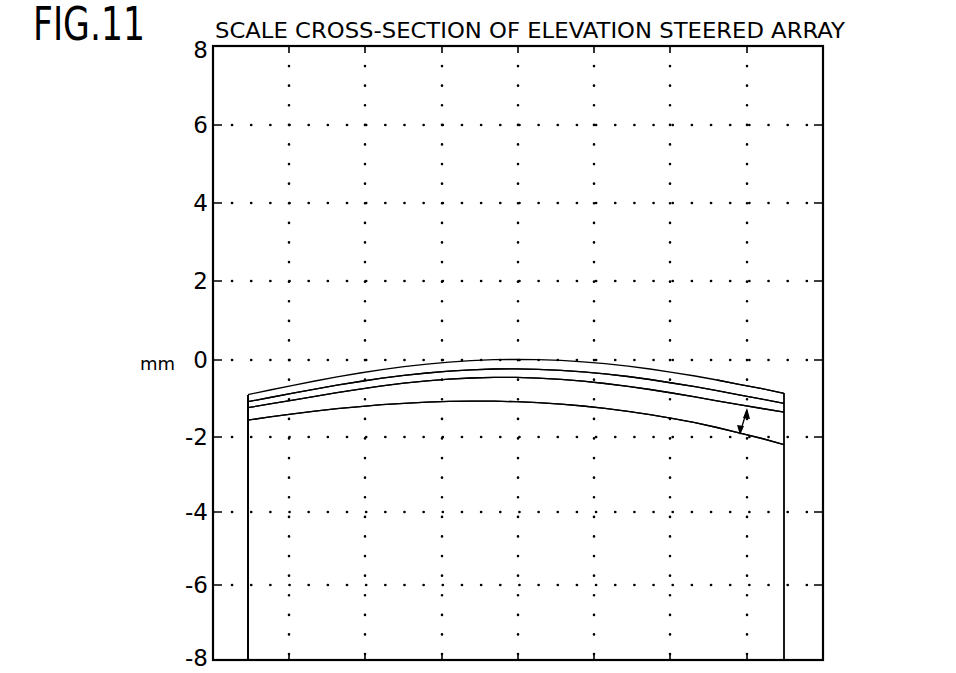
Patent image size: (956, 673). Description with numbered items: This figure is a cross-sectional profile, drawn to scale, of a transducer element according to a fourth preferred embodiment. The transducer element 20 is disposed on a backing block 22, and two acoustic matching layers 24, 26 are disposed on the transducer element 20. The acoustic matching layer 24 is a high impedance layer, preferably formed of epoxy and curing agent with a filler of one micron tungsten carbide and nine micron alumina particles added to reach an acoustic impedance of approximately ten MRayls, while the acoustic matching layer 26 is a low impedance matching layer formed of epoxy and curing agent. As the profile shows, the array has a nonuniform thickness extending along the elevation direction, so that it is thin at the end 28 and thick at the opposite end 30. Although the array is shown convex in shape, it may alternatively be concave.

The transducer element 20 is at (773, 425).
The backing block 22 is at (765, 460).
The acoustic matching layer 24 is at (783, 410).
The acoustic matching layer 26 is at (783, 399).
The end 28 is at (270, 368).
The opposite end 30 is at (758, 355).